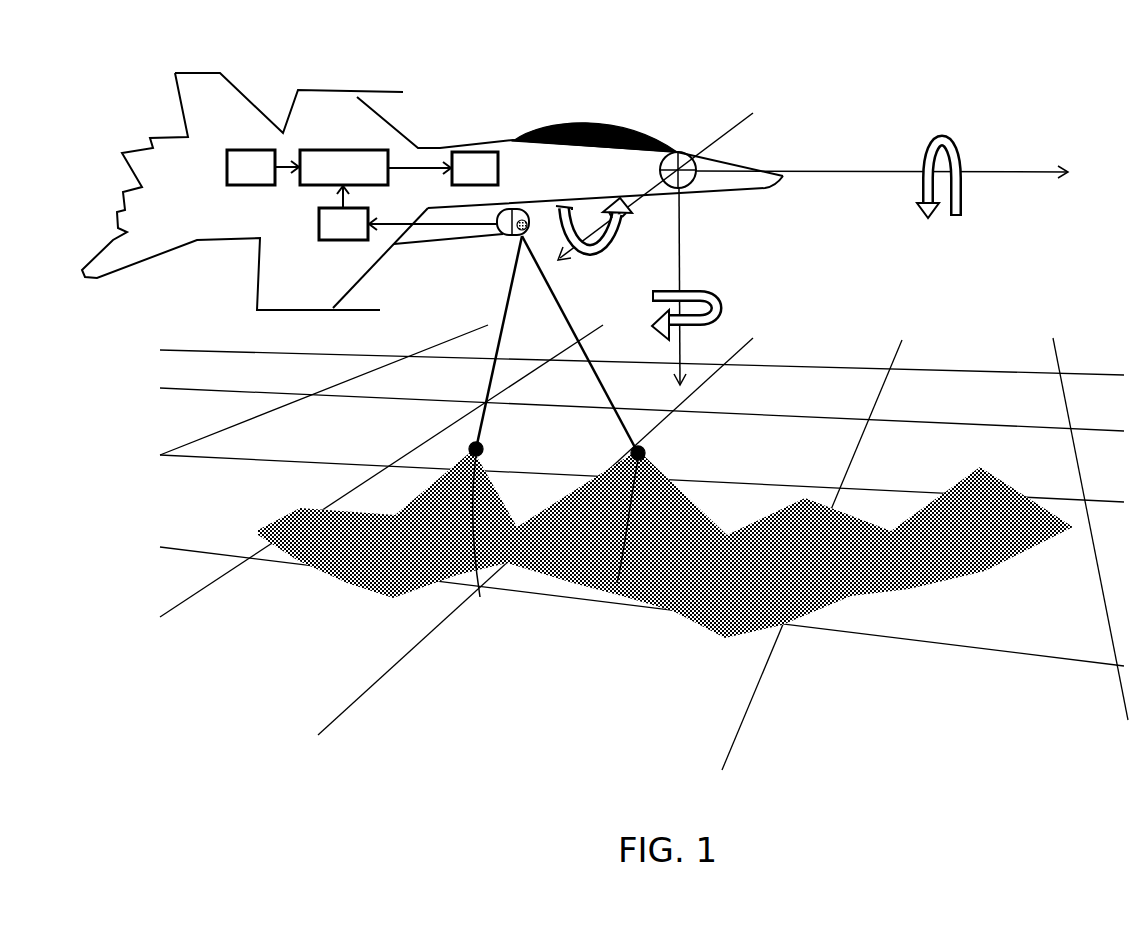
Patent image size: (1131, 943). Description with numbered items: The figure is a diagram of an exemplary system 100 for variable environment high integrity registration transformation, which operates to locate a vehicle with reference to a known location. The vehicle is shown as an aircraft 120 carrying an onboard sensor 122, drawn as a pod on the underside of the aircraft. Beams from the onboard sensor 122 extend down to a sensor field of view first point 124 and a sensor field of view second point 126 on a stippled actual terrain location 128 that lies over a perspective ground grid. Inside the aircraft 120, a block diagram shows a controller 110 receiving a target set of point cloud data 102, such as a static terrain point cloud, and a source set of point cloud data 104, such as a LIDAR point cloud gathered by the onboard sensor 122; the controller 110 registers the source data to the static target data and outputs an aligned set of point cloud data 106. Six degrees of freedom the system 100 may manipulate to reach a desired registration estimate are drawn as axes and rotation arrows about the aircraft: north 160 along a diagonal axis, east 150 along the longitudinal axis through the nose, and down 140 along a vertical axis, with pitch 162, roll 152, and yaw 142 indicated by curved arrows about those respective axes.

The system 100 is at (111, 127).
The target set of point cloud data 102 is at (263, 167).
The source set of point cloud data 104 is at (408, 213).
The aligned set of point cloud data 106 is at (475, 168).
The controller 110 is at (375, 167).
The vehicle 120 is at (573, 128).
The onboard sensor 122 is at (517, 239).
The sensor field of view first point 124 is at (480, 597).
The sensor field of view second point 126 is at (617, 583).
The actual terrain location 128 is at (390, 548).
The down 140 is at (683, 245).
The yaw 142 is at (715, 304).
The east 150 is at (789, 168).
The roll 152 is at (941, 136).
The north 160 is at (733, 128).
The pitch 162 is at (612, 263).